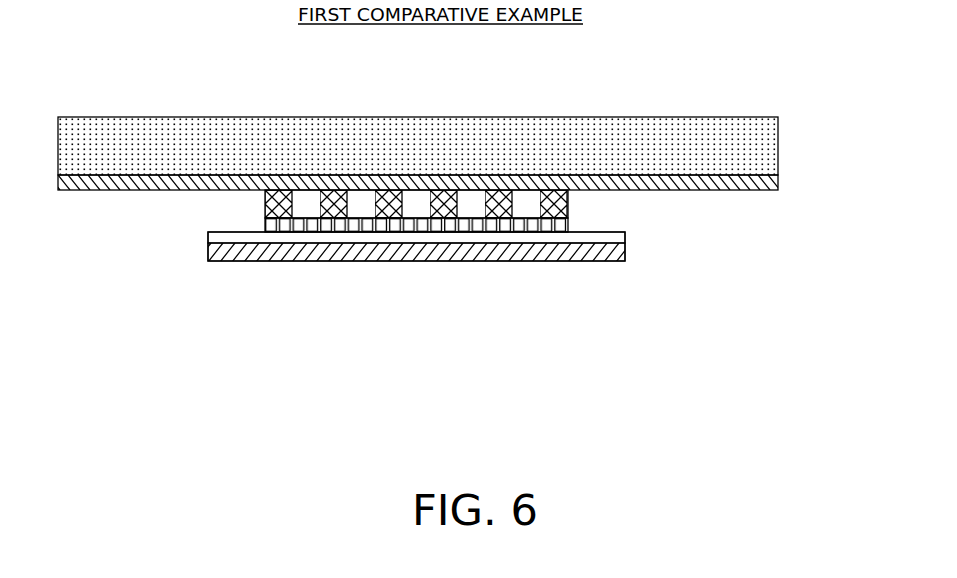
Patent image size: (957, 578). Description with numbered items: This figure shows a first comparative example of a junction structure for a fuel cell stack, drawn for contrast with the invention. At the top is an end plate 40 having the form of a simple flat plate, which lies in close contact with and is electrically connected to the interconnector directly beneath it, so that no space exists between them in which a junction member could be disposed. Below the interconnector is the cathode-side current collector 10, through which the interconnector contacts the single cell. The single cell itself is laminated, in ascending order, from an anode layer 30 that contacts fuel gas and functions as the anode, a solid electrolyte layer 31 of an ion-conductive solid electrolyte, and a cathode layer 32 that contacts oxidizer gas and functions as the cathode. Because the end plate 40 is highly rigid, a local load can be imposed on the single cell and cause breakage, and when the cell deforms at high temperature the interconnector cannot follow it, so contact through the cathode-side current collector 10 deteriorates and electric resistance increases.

The end plate 40 is at (778, 147).
The cathode-side current collector 10 is at (265, 200).
The cathode layer 32 is at (527, 220).
The solid electrolyte layer 31 is at (577, 237).
The anode layer 30 is at (607, 257).